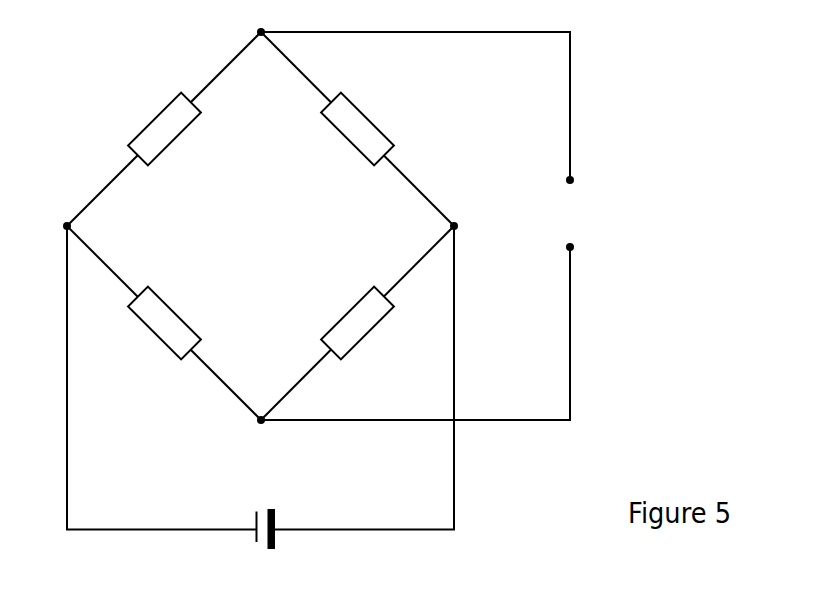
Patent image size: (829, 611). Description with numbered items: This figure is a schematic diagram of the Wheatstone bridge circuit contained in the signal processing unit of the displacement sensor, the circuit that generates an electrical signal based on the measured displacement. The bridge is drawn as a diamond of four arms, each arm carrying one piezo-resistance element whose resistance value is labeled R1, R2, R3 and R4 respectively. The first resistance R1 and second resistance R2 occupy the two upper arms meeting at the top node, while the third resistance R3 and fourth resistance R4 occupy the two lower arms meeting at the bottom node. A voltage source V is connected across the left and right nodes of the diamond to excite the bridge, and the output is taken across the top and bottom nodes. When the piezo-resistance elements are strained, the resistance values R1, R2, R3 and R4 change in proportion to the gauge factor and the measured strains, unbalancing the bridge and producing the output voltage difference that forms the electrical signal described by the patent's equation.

The first piezo-resistance element resistance R1 is at (357, 129).
The second piezo-resistance element resistance R2 is at (164, 129).
The third piezo-resistance element resistance R3 is at (164, 323).
The fourth piezo-resistance element resistance R4 is at (357, 323).
The voltage source V is at (284, 546).